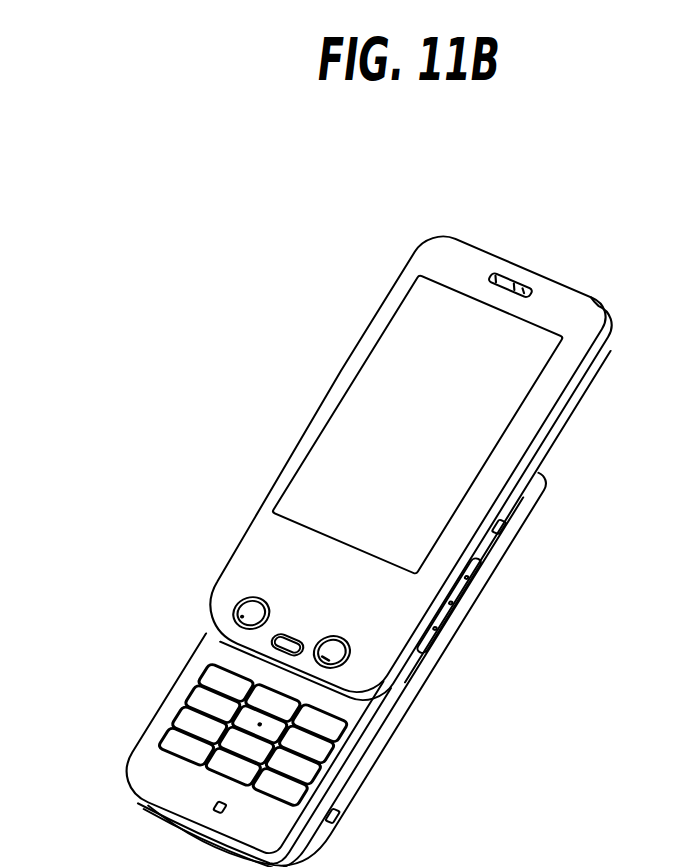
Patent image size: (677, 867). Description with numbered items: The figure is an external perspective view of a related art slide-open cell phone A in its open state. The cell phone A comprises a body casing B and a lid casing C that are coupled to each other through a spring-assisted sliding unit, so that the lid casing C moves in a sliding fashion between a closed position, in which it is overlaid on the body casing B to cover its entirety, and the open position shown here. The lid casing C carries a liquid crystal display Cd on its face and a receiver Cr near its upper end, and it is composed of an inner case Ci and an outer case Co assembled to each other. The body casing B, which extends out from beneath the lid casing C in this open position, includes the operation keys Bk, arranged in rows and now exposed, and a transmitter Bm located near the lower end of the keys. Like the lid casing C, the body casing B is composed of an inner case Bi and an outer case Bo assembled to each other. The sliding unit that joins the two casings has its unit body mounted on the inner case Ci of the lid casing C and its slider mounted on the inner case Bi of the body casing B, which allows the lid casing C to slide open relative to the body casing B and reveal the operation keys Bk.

The slide-open cell phone A is at (257, 402).
The body casing B is at (543, 514).
The lid casing C is at (434, 226).
The liquid crystal display Cd is at (373, 381).
The receiver Cr is at (500, 278).
The outer case Co is at (580, 312).
The inner case Ci is at (584, 386).
The operation keys Bk is at (217, 703).
The inner case Bi is at (156, 728).
The transmitter Bm is at (207, 807).
The outer case Bo is at (357, 780).